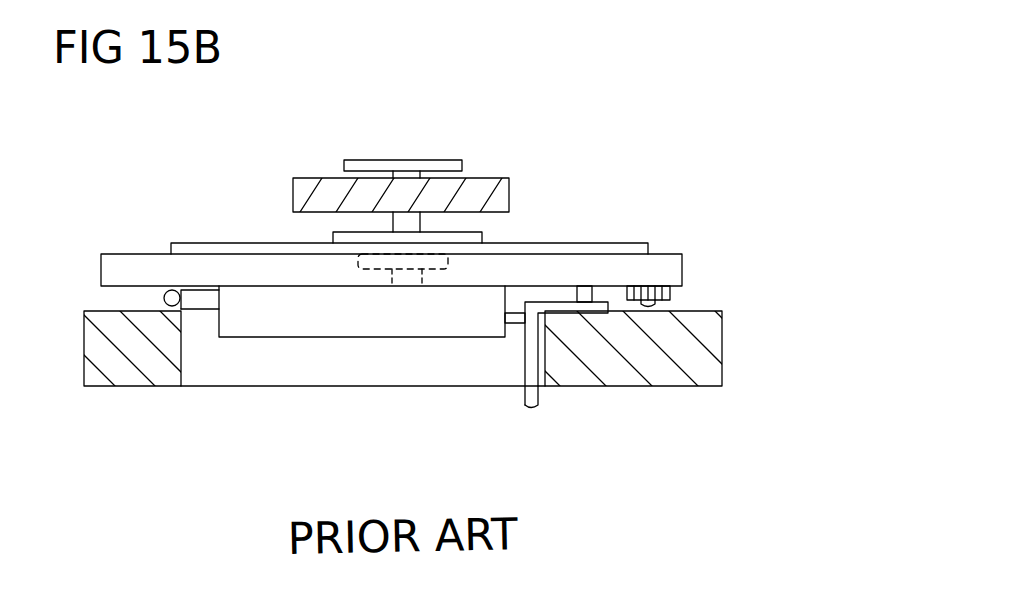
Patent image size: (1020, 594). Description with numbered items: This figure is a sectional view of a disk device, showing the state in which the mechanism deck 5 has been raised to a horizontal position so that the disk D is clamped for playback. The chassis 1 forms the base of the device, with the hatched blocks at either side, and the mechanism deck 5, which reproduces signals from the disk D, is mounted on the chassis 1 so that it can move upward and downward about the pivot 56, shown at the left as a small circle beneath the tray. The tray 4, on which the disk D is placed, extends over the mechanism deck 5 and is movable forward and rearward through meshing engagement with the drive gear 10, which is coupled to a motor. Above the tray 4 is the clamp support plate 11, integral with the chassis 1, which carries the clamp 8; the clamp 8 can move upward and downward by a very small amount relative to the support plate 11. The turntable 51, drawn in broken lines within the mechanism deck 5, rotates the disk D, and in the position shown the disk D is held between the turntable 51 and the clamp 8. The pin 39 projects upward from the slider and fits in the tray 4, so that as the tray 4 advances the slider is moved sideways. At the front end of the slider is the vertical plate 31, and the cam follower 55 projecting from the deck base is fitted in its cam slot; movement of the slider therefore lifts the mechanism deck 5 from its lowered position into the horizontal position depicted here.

The chassis 1 is at (710, 353).
The tray 4 is at (668, 273).
The mechanism deck 5 is at (313, 326).
The clamp 8 is at (483, 238).
The drive gear 10 is at (672, 296).
The clamp support plate 11 is at (493, 182).
The vertical plate 31 is at (533, 347).
The pin 39 is at (585, 300).
The turntable 51 is at (433, 286).
The cam follower 55 is at (515, 323).
The pivot 56 is at (170, 292).
The disk D is at (618, 243).